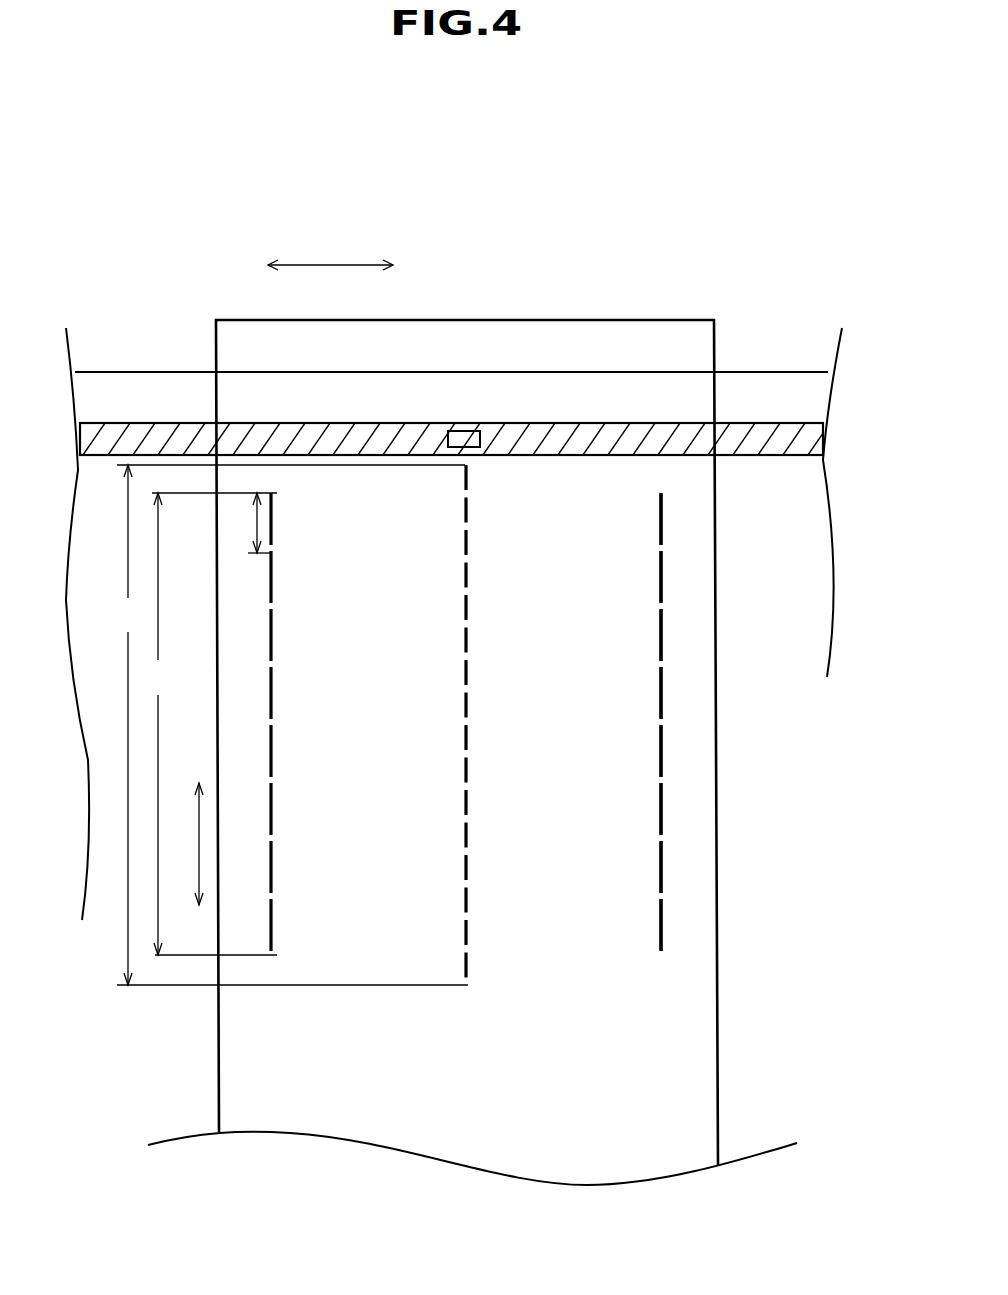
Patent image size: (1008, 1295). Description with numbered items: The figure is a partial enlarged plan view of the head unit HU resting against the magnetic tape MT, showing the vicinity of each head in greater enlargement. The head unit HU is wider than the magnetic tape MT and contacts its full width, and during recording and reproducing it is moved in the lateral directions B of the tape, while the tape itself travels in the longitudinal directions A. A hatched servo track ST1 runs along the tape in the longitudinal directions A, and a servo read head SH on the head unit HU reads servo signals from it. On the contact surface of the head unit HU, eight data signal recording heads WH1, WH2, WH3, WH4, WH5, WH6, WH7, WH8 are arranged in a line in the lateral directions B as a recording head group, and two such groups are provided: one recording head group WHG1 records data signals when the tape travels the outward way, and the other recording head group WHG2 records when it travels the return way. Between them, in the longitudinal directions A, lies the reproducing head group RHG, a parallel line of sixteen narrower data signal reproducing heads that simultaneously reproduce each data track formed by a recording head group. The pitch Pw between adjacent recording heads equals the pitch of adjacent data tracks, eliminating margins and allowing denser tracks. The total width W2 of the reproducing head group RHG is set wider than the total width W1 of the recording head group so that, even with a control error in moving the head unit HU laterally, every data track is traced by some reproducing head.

The magnetic tape MT is at (789, 359).
The servo track ST1 is at (140, 440).
The head unit HU is at (481, 314).
The servo read head SH is at (470, 432).
The longitudinal directions A is at (330, 253).
The total width of the reproducing head group W2 is at (289, 725).
The total width of the recording head group W1 is at (210, 724).
The pitch Pw is at (245, 523).
The lateral directions B is at (188, 844).
The recording head group WHG1 is at (297, 485).
The reproducing head group RHG is at (480, 460).
The recording head group WHG2 is at (785, 485).
The data signal recording head WH1 is at (661, 518).
The data signal recording head WH2 is at (661, 576).
The data signal recording head WH3 is at (661, 634).
The data signal recording head WH4 is at (661, 692).
The data signal recording head WH5 is at (661, 750).
The data signal recording head WH6 is at (661, 808).
The data signal recording head WH7 is at (661, 866).
The data signal recording head WH8 is at (661, 924).